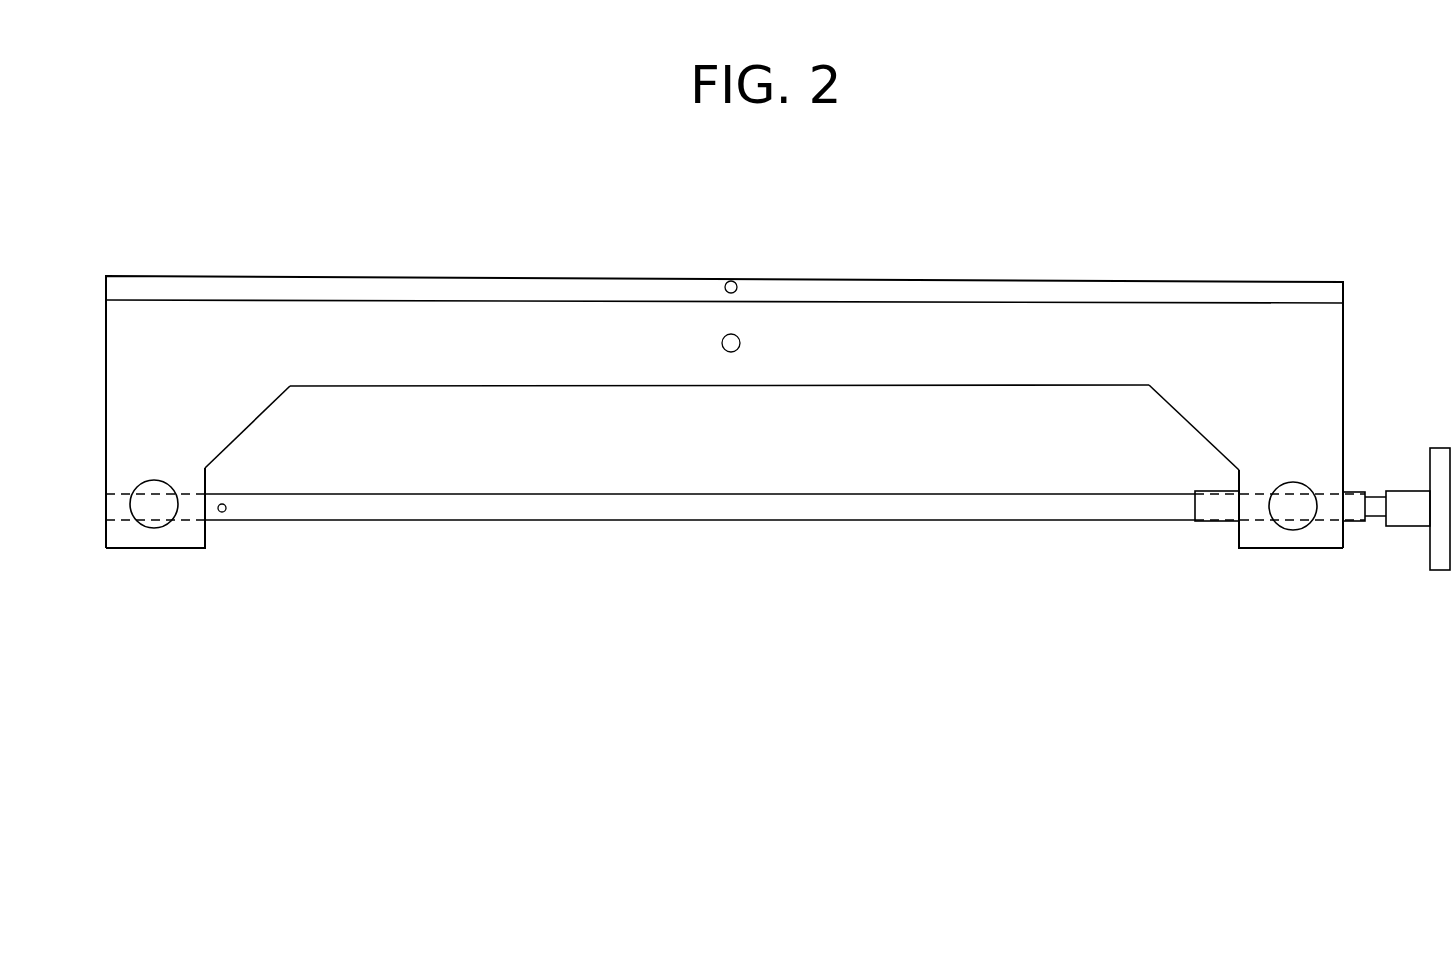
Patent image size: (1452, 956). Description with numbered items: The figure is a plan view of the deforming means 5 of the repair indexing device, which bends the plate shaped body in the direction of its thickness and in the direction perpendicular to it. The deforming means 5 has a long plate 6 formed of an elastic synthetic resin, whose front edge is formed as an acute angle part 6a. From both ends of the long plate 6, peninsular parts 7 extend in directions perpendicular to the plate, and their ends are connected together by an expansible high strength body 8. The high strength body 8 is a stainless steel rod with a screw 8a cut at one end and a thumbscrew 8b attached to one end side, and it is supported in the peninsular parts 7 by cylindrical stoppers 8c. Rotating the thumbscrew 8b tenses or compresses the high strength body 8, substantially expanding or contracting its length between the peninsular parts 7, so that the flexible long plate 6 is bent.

The deforming means 5 is at (635, 603).
The long plate 6 is at (561, 328).
The acute angle part 6a is at (860, 292).
The peninsular part 7 is at (197, 537).
The high strength body 8 is at (857, 508).
The screw 8a is at (1328, 515).
The thumbscrew 8b is at (1440, 555).
The cylindrical stopper 8c is at (152, 513).